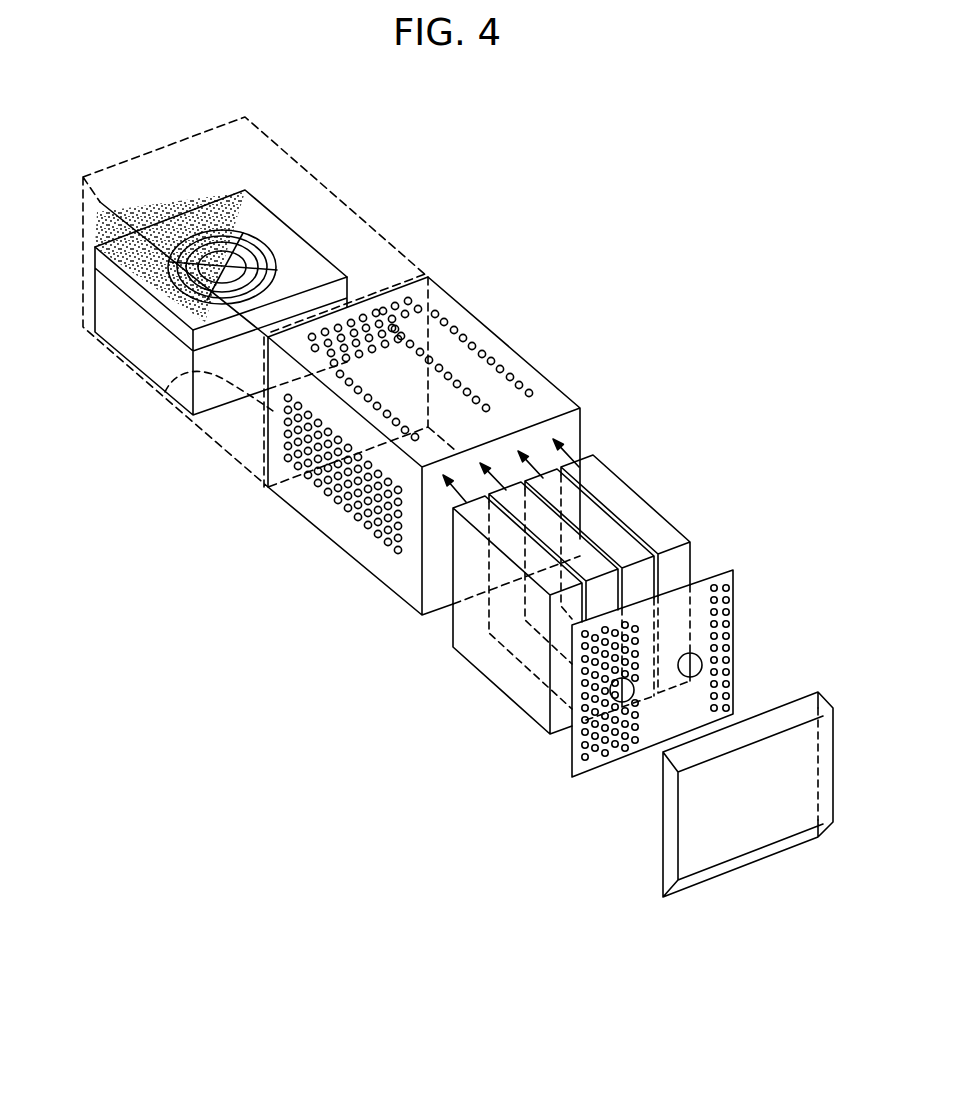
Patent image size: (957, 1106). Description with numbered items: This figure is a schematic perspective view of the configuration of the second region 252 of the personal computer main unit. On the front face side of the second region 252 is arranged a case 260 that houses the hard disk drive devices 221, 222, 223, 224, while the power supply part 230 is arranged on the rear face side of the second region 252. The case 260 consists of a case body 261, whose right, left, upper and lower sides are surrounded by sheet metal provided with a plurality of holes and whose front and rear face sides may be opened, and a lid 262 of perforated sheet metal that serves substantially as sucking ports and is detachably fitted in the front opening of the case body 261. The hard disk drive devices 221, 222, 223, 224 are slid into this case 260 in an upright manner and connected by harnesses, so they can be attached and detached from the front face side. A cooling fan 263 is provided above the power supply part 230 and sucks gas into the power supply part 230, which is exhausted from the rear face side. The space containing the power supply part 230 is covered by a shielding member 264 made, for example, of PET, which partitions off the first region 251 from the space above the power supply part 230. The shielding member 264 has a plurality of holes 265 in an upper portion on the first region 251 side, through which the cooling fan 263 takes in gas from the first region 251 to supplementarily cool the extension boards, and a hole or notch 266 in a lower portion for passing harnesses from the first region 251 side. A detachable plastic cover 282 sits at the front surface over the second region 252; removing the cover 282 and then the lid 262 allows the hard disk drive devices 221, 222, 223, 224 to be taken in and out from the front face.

The hard disk drive device 221 is at (513, 550).
The hard disk drive device 222 is at (553, 550).
The hard disk drive device 223 is at (598, 545).
The hard disk drive device 224 is at (660, 543).
The power supply part 230 is at (246, 312).
The first region 251 is at (133, 340).
The second region 252 is at (441, 265).
The case 260 is at (432, 446).
The case body 261 is at (475, 320).
The lid 262 is at (700, 588).
The cooling fan 263 is at (312, 258).
The shielding member 264 is at (303, 168).
The holes 265 is at (102, 213).
The hole or notch 266 is at (240, 425).
The cover 282 is at (670, 805).